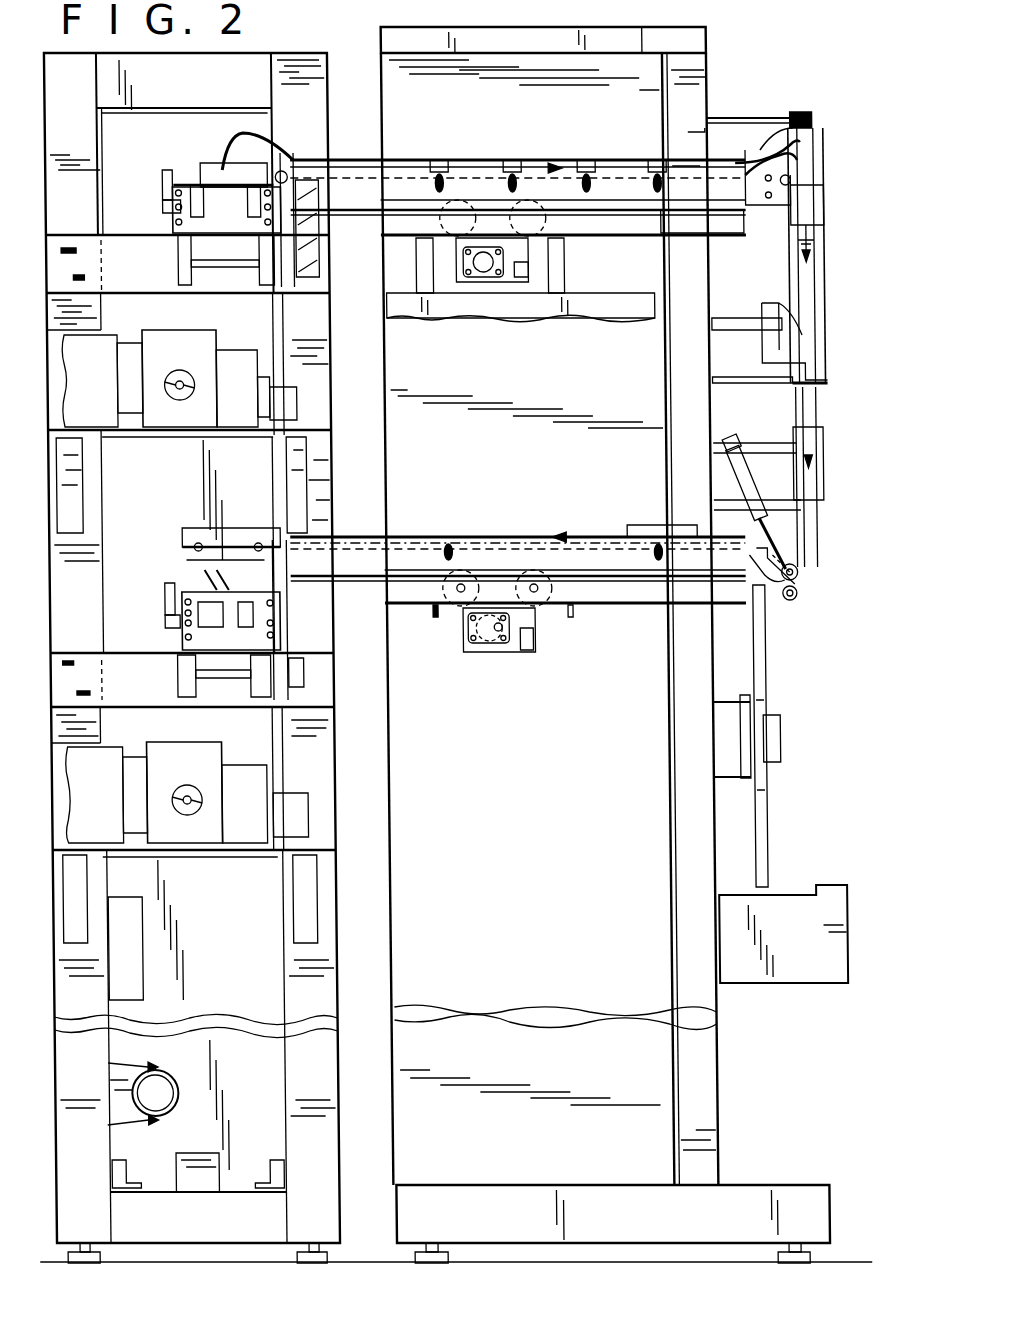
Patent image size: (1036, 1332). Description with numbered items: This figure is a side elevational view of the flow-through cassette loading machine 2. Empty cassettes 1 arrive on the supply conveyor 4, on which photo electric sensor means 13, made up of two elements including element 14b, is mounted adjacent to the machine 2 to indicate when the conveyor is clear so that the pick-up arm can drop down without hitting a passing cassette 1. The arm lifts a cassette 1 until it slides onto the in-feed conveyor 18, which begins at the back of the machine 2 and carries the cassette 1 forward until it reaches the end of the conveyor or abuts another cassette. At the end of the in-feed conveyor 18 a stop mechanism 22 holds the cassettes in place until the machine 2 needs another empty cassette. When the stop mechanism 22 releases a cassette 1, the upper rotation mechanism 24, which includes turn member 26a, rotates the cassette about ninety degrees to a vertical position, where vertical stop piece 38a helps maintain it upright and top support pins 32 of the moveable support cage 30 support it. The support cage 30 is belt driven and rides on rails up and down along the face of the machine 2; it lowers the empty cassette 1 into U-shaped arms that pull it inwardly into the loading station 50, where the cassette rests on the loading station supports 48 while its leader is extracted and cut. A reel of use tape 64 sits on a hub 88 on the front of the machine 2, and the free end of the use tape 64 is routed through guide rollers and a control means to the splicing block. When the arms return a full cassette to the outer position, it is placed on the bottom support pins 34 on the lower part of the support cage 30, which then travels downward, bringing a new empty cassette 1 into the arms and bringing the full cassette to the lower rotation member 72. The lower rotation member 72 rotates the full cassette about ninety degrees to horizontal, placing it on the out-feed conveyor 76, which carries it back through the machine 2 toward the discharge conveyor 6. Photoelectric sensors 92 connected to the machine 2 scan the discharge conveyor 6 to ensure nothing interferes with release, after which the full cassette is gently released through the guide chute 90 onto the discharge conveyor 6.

The cassette loading machine 2 is at (608, 19).
The cassette 1 is at (470, 160).
The supply conveyor 4 is at (180, 182).
The photo electric sensor means 13 is at (158, 183).
The sensor element 14b is at (165, 190).
The in-feed conveyor 18 is at (407, 170).
The stop mechanism 22 is at (738, 170).
The upper rotation mechanism 24 is at (767, 152).
The vertical stop piece 38a is at (817, 132).
The turn member 26a is at (800, 160).
The top support pins 32 is at (817, 182).
The moveable support cage 30 is at (825, 333).
The loading station 50 is at (725, 356).
The loading station supports 48 is at (764, 388).
The bottom support pins 34 is at (812, 387).
The guide chute 90 is at (176, 536).
The discharge conveyor 6 is at (162, 573).
The photoelectric sensors 92 is at (160, 592).
The out-feed conveyor 76 is at (518, 535).
The lower rotation member 72 is at (798, 582).
The hub 88 is at (745, 765).
The use tape 64 is at (751, 803).